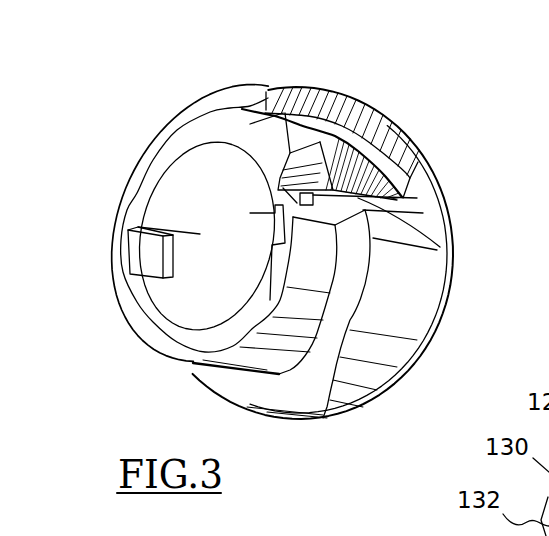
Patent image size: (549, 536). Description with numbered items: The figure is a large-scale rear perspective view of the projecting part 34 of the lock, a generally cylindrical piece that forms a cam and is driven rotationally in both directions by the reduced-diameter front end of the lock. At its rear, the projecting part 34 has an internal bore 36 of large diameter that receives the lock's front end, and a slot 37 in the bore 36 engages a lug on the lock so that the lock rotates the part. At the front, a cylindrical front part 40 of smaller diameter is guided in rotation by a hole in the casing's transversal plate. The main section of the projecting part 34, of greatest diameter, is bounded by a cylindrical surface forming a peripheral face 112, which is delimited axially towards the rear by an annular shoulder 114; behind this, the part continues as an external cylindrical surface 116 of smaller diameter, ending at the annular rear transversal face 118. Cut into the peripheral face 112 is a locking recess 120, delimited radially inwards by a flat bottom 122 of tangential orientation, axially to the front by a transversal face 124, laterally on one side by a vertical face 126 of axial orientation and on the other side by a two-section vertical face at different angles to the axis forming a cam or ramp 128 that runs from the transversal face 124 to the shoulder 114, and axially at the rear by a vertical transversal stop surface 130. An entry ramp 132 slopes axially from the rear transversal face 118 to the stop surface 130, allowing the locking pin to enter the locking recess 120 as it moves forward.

The projecting part 34 is at (433, 122).
The rear internal bore 36 is at (193, 302).
The slot 37 is at (140, 253).
The cylindrical front part 40 is at (276, 370).
The peripheral face 112 is at (403, 290).
The annular shoulder 114 is at (203, 100).
The external cylindrical surface 116 is at (332, 414).
The annular rear transversal face 118 is at (163, 148).
The locking recess 120 is at (363, 178).
The flat bottom 122 is at (422, 205).
The transversal face 124 is at (421, 179).
The vertical face 126 is at (438, 236).
The cam or ramp 128 is at (300, 108).
The transversal stop surface 130 is at (333, 135).
The entry ramp 132 is at (283, 188).